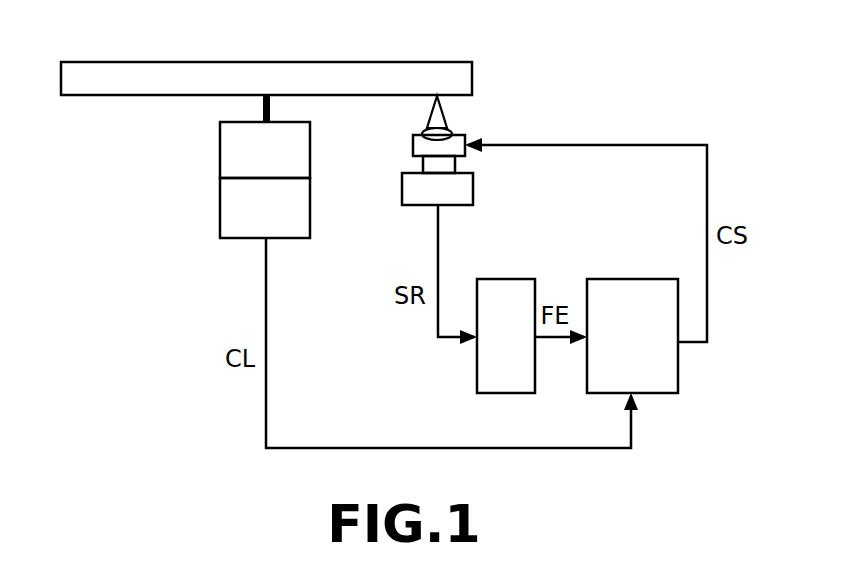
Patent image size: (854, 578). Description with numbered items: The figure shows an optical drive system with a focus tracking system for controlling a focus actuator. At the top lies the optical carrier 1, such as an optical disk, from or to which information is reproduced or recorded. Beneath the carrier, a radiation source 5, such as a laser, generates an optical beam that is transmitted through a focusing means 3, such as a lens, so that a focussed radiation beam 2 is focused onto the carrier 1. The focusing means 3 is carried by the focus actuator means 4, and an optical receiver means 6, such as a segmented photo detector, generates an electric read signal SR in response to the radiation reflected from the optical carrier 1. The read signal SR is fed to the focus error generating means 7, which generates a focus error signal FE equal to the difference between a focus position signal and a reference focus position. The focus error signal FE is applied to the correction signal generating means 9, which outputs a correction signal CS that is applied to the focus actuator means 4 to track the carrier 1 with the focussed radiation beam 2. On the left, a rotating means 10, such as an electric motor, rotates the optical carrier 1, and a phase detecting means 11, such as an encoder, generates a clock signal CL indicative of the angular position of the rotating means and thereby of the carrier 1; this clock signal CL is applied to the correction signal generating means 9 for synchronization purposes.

The optical carrier 1 is at (385, 62).
The focussed radiation beam 2 is at (455, 123).
The focusing means 3 is at (453, 130).
The focus actuator means 4 is at (413, 145).
The radiation source 5 is at (457, 165).
The optical receiver means 6 is at (402, 187).
The focus error generating means 7 is at (507, 277).
The correction signal generating means 9 is at (626, 277).
The rotating means 10 is at (217, 145).
The phase detecting means 11 is at (218, 212).